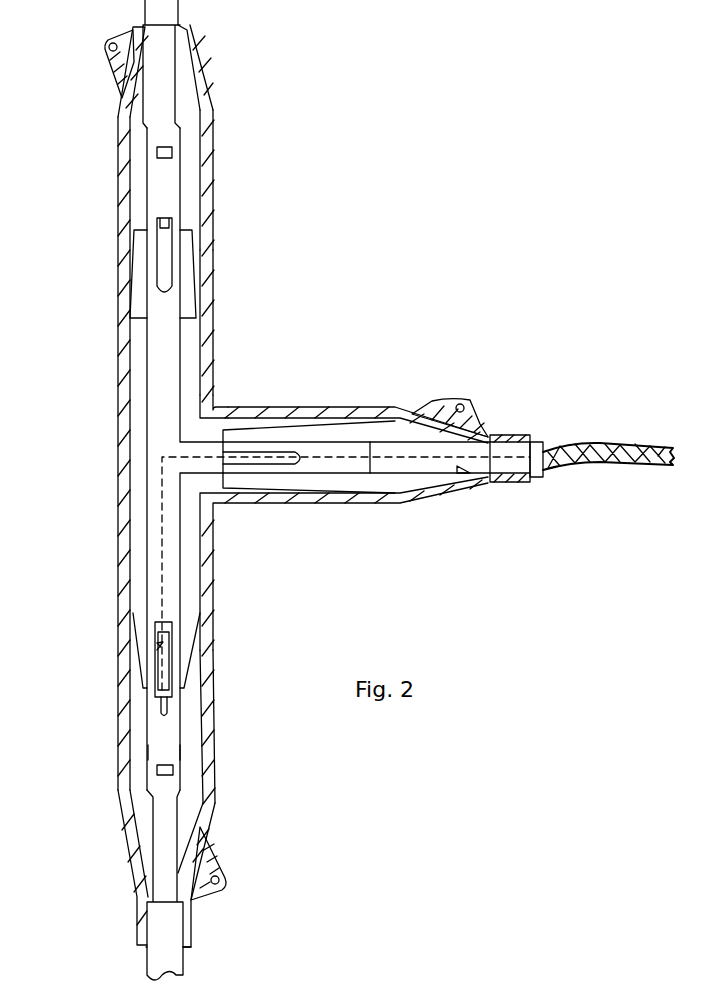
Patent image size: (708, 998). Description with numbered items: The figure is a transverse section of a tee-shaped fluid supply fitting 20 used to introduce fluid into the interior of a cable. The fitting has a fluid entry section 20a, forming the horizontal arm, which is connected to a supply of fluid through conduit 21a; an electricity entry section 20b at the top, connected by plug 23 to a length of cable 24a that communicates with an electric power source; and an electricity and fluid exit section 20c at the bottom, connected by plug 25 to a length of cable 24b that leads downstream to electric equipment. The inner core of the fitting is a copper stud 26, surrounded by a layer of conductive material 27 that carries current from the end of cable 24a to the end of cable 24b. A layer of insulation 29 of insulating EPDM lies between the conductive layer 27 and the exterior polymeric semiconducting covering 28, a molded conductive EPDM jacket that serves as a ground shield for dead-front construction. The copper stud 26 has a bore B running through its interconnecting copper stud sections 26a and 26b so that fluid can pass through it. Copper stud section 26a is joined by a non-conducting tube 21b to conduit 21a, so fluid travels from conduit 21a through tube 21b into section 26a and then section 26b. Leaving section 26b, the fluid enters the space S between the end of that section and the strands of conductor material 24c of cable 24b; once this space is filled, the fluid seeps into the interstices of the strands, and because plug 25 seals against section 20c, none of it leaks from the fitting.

The fluid supply fitting 20 is at (108, 458).
The fluid entry section 20a is at (278, 406).
The electricity entry section 20b is at (213, 308).
The electricity and fluid exit section 20c is at (218, 603).
The conduit 21a is at (580, 442).
The tube 21b is at (462, 462).
The plug 23 is at (208, 187).
The cable 24a is at (163, 107).
The cable 24b is at (162, 838).
The strands of conductor material 24c is at (155, 770).
The plug 25 is at (208, 728).
The copper stud 26 is at (165, 403).
The copper stud section 26a is at (360, 453).
The copper stud section 26b is at (163, 603).
The layer of conductive material 27 is at (145, 315).
The semiconducting covering 28 is at (128, 242).
The layer of insulation 29 is at (188, 395).
The bore B is at (158, 563).
The space S is at (168, 753).